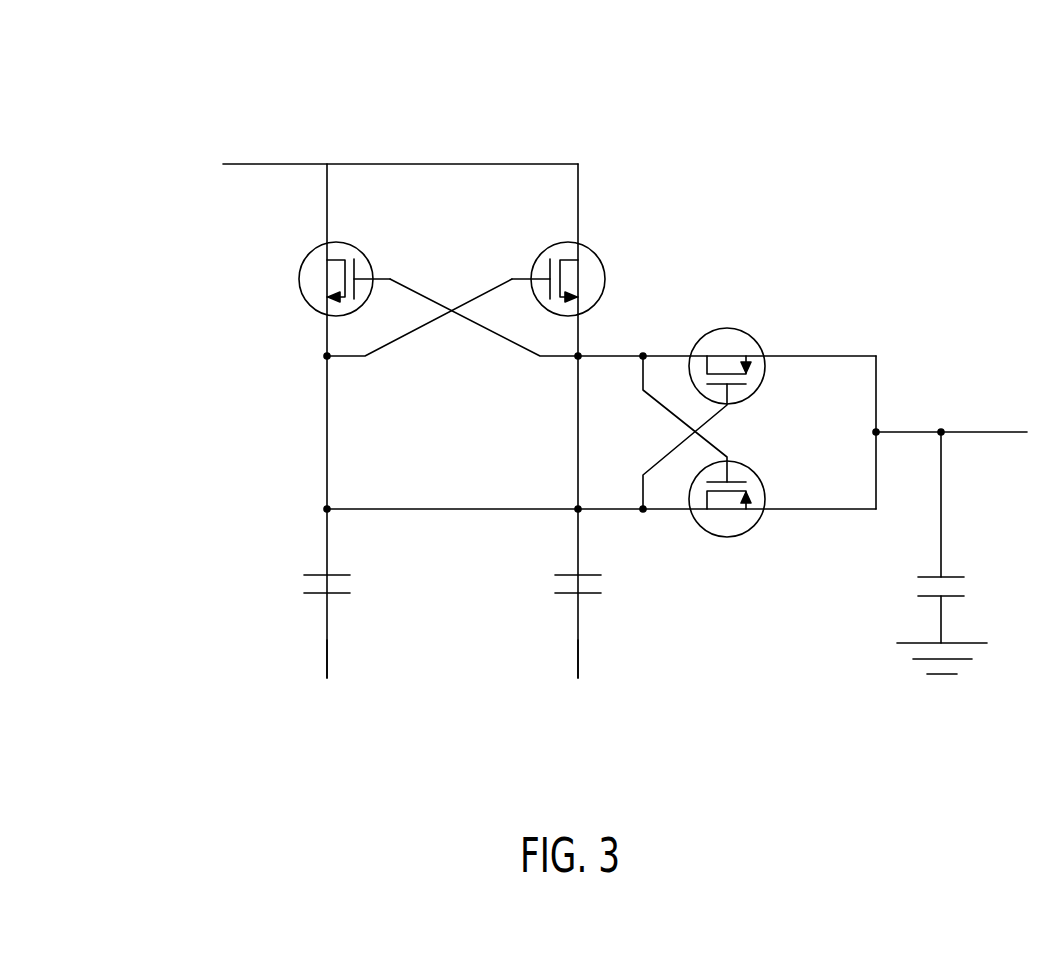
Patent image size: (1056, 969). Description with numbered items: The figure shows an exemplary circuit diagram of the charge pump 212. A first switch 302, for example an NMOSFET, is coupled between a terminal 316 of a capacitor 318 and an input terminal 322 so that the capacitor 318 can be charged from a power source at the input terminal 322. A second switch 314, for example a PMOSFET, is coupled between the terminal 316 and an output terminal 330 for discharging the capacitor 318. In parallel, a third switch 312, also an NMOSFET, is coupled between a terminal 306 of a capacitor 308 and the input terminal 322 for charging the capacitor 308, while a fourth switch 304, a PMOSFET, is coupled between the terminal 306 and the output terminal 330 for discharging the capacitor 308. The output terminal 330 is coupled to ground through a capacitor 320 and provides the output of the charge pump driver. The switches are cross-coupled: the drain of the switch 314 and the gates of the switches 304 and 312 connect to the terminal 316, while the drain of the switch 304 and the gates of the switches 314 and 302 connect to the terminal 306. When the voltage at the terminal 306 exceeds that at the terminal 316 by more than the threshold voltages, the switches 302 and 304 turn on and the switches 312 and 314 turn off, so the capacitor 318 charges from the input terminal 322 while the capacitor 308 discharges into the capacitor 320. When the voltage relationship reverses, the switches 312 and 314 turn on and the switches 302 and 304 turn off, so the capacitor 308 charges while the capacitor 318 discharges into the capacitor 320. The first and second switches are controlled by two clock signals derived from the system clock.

The charge pump 212 is at (197, 143).
The input terminal 322 is at (307, 163).
The first switch 302 is at (357, 245).
The third switch 312 is at (550, 245).
The terminal of capacitor 308 306 is at (577, 358).
The terminal of capacitor 318 316 is at (328, 507).
The fourth switch 304 is at (762, 380).
The second switch 314 is at (762, 487).
The output terminal 330 is at (955, 432).
The capacitor 318 is at (340, 573).
The capacitor 308 is at (565, 573).
The capacitor 320 is at (932, 575).